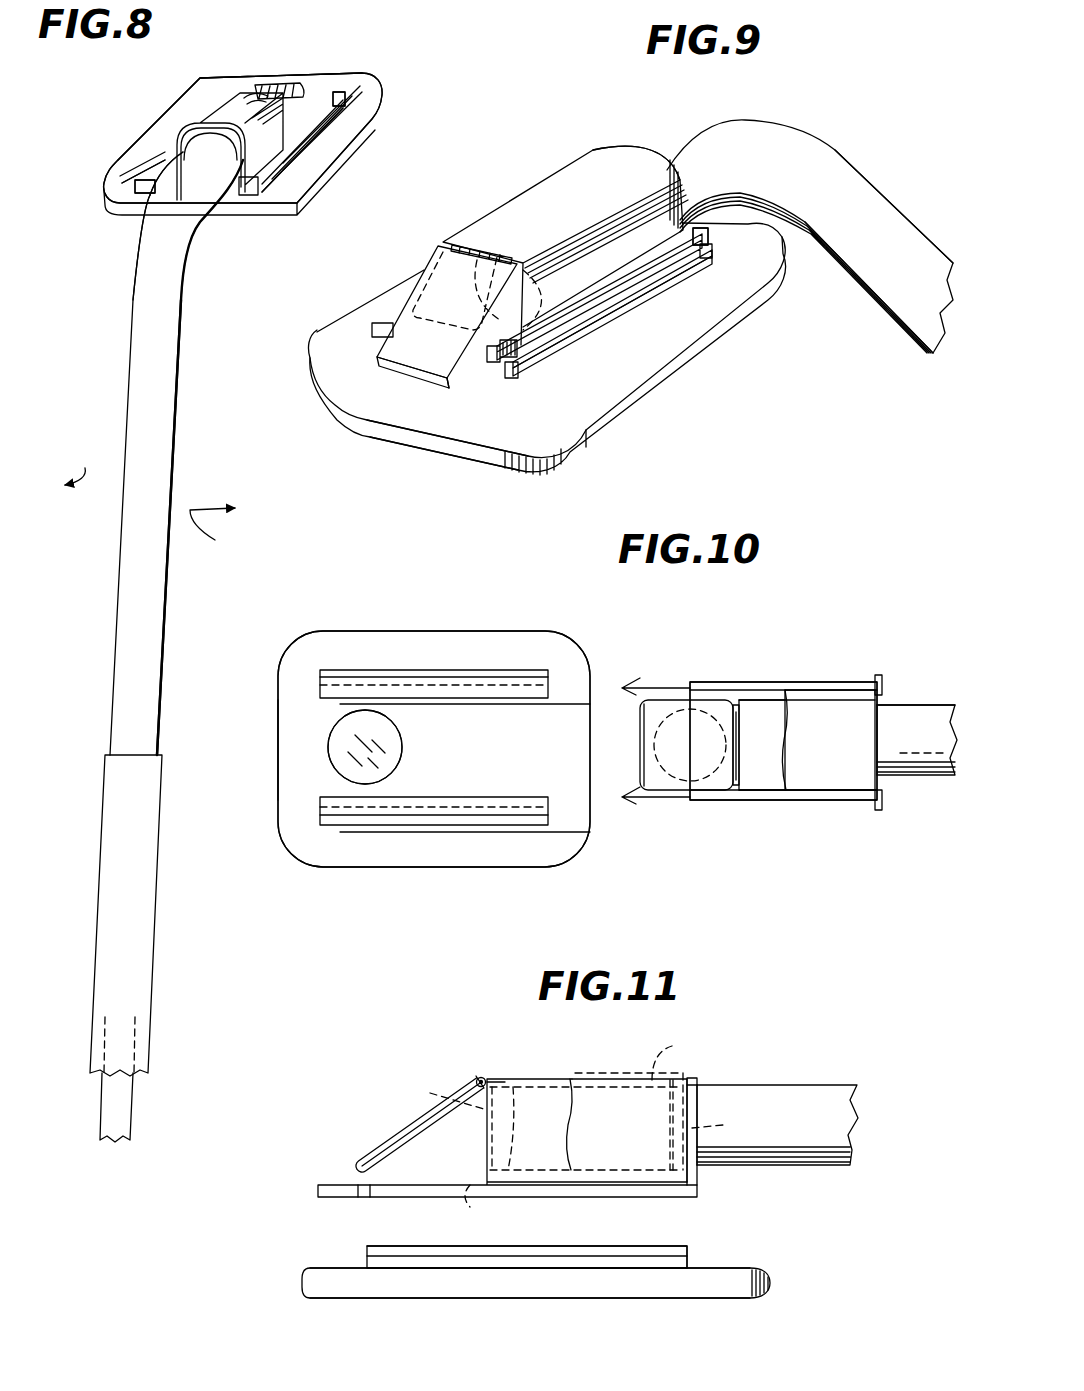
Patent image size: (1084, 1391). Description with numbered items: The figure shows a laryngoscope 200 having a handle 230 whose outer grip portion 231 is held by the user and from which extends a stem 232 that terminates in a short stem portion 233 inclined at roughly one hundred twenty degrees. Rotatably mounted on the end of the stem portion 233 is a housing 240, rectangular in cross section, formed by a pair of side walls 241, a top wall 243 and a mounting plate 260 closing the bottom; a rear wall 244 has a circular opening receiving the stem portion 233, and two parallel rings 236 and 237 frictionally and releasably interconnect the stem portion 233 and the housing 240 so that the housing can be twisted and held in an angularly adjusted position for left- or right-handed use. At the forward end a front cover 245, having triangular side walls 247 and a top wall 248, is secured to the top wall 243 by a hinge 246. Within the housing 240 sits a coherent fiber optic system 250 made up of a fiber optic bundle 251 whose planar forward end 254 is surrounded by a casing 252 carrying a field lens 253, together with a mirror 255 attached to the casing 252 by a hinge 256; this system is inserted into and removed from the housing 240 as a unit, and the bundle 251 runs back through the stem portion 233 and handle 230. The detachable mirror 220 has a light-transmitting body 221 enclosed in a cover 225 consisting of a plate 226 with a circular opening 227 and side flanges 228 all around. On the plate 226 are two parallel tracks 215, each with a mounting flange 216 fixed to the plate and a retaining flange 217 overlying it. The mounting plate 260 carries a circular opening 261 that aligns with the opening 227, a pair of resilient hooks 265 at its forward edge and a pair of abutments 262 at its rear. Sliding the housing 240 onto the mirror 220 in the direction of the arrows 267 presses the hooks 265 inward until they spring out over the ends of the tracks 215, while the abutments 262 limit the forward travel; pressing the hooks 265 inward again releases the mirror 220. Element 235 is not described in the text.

In FIG. 8, the laryngoscope 200 is at (385, 40).
In FIG. 8, the track 215 is at (140, 158).
In FIG. 9, the track 215 is at (352, 326).
In FIG. 10, the track 215 is at (355, 665).
In FIG. 11, the track 215 is at (365, 1263).
In FIG. 8, the mounting flange 216 is at (160, 140).
In FIG. 9, the mounting flange 216 is at (660, 270).
In FIG. 10, the mounting flange 216 is at (445, 670).
In FIG. 11, the mounting flange 216 is at (435, 1268).
In FIG. 8, the retaining flange 217 is at (155, 167).
In FIG. 9, the retaining flange 217 is at (690, 250).
In FIG. 10, the retaining flange 217 is at (512, 690).
In FIG. 11, the retaining flange 217 is at (668, 1252).
In FIG. 8, the mirror 220 is at (170, 95).
In FIG. 9, the mirror 220 is at (712, 372).
In FIG. 10, the mirror 220 is at (400, 607).
In FIG. 11, the mirror 220 is at (290, 1300).
In FIG. 10, the light-transmitting body 221 is at (352, 735).
In FIG. 8, the cover 225 is at (365, 95).
In FIG. 9, the cover 225 is at (578, 405).
In FIG. 10, the cover 225 is at (370, 848).
In FIG. 11, the cover 225 is at (762, 1268).
In FIG. 8, the plate 226 is at (233, 78).
In FIG. 9, the plate 226 is at (553, 420).
In FIG. 10, the plate 226 is at (282, 820).
In FIG. 10, the circular opening 227 is at (330, 757).
In FIG. 9, the side flanges 228 is at (476, 432).
In FIG. 11, the side flanges 228 is at (752, 1292).
In FIG. 8, the handle 230 is at (175, 465).
In FIG. 8, the grip portion 231 is at (145, 962).
In FIG. 8, the stem 232 is at (120, 580).
In FIG. 9, the stem 232 is at (880, 215).
In FIG. 8, the stem portion 233 is at (200, 190).
In FIG. 9, the stem portion 233 is at (673, 145).
In FIG. 10, the stem portion 233 is at (932, 765).
In FIG. 11, the stem portion 233 is at (840, 1095).
In FIG. 8, the strap attachment 235 is at (227, 190).
In FIG. 10, the strap attachment 235 is at (890, 693).
In FIG. 11, the strap attachment 235 is at (700, 1078).
In FIG. 8, the ring 236 is at (172, 200).
In FIG. 10, the ring 236 is at (880, 735).
In FIG. 11, the ring 236 is at (692, 1108).
In FIG. 11, the ring 237 is at (660, 1075).
In FIG. 8, the housing 240 is at (200, 100).
In FIG. 9, the housing 240 is at (560, 195).
In FIG. 10, the housing 240 is at (845, 770).
In FIG. 9, the side walls 241 is at (670, 213).
In FIG. 9, the top wall 243 is at (592, 168).
In FIG. 10, the top wall 243 is at (835, 720).
In FIG. 11, the rear wall 244 is at (724, 1125).
In FIG. 9, the front cover 245 is at (428, 268).
In FIG. 9, the hinge 246 is at (470, 244).
In FIG. 9, the side walls 247 is at (440, 398).
In FIG. 9, the top wall 248 is at (402, 383).
In FIG. 10, the coherent fiber optic system 250 is at (790, 662).
In FIG. 11, the coherent fiber optic system 250 is at (588, 1062).
In FIG. 8, the fiber optic bundle 251 is at (122, 1125).
In FIG. 10, the casing 252 is at (760, 712).
In FIG. 11, the casing 252 is at (560, 1079).
In FIG. 9, the field lens 253 is at (528, 292).
In FIG. 11, the field lens 253 is at (470, 1102).
In FIG. 11, the forward end 254 is at (500, 1085).
In FIG. 8, the mirror 255 is at (302, 82).
In FIG. 9, the mirror 255 is at (545, 270).
In FIG. 10, the mirror 255 is at (718, 782).
In FIG. 11, the mirror 255 is at (398, 1133).
In FIG. 8, the hinge 256 is at (258, 88).
In FIG. 9, the hinge 256 is at (490, 232).
In FIG. 10, the hinge 256 is at (740, 785).
In FIG. 11, the hinge 256 is at (478, 1080).
In FIG. 10, the mounting plate 260 is at (815, 690).
In FIG. 11, the mounting plate 260 is at (622, 1192).
In FIG. 10, the circular opening 261 is at (702, 700).
In FIG. 11, the circular opening 261 is at (465, 1195).
In FIG. 8, the abutments 262 is at (140, 190).
In FIG. 9, the abutments 262 is at (706, 236).
In FIG. 10, the abutments 262 is at (885, 690).
In FIG. 11, the abutments 262 is at (697, 1182).
In FIG. 8, the hooks 265 is at (338, 90).
In FIG. 9, the hooks 265 is at (330, 365).
In FIG. 10, the hooks 265 is at (623, 686).
In FIG. 11, the hooks 265 is at (330, 1195).
In FIG. 8, the direction arrow 267 is at (148, 503).